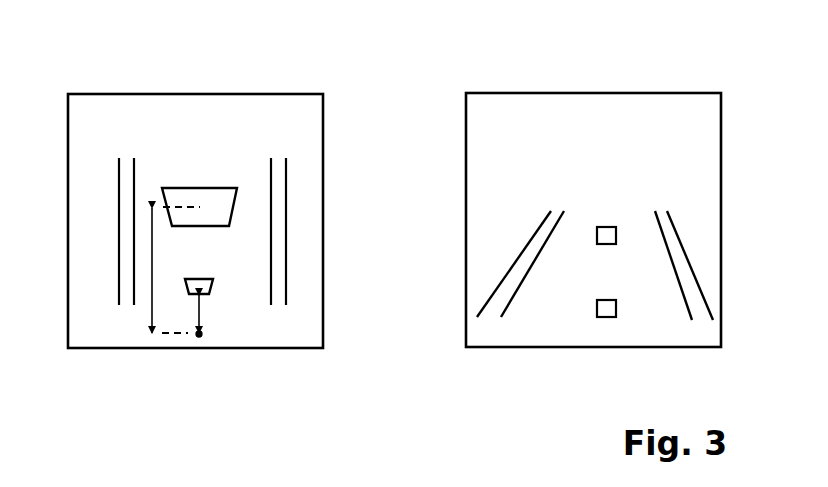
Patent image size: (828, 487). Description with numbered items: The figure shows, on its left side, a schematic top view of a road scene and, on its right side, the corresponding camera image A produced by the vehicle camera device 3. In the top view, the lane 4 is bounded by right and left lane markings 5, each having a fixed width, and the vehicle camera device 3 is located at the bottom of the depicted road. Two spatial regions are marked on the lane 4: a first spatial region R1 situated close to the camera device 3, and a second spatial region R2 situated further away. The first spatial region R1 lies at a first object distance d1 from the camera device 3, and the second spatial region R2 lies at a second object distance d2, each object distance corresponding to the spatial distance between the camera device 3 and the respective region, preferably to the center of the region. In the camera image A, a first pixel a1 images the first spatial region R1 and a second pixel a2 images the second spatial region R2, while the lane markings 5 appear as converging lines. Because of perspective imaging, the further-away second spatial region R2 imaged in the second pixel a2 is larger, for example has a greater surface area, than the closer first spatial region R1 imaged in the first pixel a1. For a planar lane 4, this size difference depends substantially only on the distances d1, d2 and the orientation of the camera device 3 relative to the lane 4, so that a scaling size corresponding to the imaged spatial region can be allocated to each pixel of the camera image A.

The camera image A is at (541, 93).
The lane markings 5 is at (127, 198).
The lane 4 is at (245, 257).
The second spatial region R2 is at (200, 187).
The first spatial region R1 is at (213, 285).
The second object distance d2 is at (152, 272).
The first object distance d1 is at (203, 310).
The vehicle camera device 3 is at (197, 337).
The second pixel a2 is at (604, 227).
The first pixel a1 is at (607, 317).